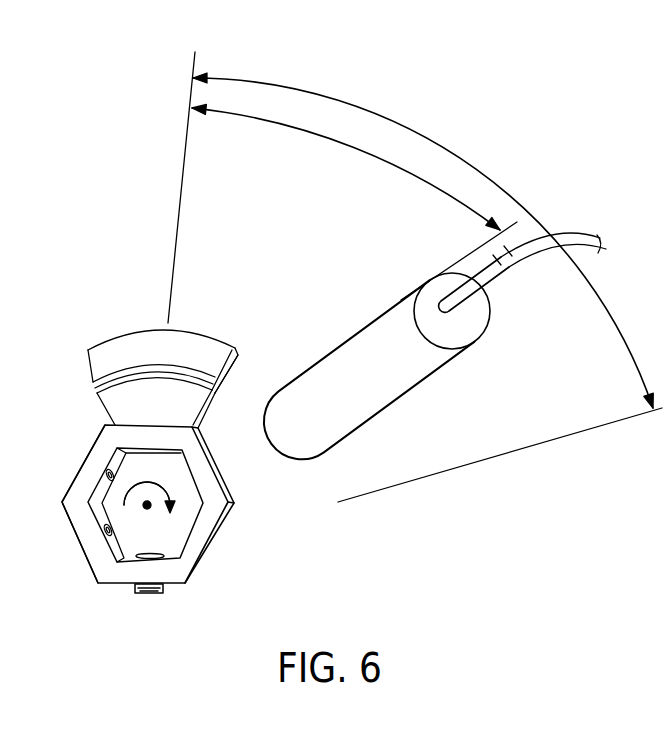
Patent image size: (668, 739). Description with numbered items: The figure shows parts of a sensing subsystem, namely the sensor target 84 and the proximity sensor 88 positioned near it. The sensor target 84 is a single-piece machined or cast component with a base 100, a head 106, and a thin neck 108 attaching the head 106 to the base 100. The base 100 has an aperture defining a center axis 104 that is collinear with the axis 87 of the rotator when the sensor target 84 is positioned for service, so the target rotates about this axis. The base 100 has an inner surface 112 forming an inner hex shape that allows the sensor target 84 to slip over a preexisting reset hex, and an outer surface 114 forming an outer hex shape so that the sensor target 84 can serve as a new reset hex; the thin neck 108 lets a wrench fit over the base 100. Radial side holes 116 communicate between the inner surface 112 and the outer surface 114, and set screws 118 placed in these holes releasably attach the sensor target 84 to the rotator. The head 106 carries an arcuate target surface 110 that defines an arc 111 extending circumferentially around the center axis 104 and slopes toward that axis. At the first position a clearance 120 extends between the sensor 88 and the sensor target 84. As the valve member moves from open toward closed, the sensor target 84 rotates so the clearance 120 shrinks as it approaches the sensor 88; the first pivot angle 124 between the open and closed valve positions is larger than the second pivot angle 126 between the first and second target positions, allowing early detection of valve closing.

The sensor target 84 is at (289, 322).
The sensor 88 is at (388, 310).
The base 100 is at (92, 548).
The head 106 is at (92, 373).
The neck 108 is at (88, 443).
The target surface 110 is at (125, 350).
The arc 111 is at (272, 368).
The inner surface 112 is at (196, 514).
The outer surface 114 is at (227, 518).
The radial side holes 116 is at (108, 480).
The set screws 118 is at (107, 405).
The clearance 120 is at (248, 378).
The first pivot angle 124 is at (366, 162).
The second pivot angle 126 is at (487, 168).
The axis 87 is at (147, 528).
The center axis 104 is at (208, 558).